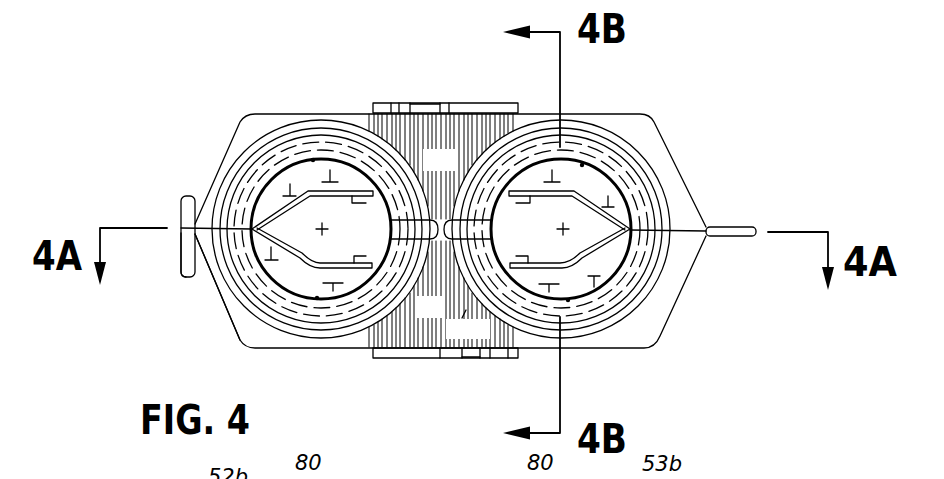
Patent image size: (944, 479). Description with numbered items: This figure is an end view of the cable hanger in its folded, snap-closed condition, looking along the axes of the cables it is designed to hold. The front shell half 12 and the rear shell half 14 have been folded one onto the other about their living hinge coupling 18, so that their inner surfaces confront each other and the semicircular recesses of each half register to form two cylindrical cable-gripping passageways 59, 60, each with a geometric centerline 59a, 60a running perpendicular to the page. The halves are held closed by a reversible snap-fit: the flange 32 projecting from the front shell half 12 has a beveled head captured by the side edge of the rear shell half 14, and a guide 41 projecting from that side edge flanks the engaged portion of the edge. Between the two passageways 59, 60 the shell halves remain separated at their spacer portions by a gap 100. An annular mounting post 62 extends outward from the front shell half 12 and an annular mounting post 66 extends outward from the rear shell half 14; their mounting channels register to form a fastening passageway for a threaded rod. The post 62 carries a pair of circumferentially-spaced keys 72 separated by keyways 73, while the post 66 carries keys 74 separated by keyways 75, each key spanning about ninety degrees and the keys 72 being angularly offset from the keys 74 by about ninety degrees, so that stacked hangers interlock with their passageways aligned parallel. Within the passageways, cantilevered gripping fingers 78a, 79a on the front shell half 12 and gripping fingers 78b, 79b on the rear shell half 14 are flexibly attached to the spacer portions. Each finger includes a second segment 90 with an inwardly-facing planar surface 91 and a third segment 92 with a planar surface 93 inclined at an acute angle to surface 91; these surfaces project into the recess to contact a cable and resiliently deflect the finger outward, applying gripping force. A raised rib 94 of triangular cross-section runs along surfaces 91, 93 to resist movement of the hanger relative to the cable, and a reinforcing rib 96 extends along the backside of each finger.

The front shell half 12 is at (670, 143).
The rear shell half 14 is at (216, 310).
The living hinge coupling 18 is at (740, 227).
The flange 32 is at (185, 273).
The guide 41 is at (186, 198).
The cable-gripping passageway 59 is at (307, 190).
The geometric centerline 59a is at (333, 286).
The cable-gripping passageway 60 is at (468, 258).
The geometric centerline 60a is at (468, 326).
The annular mounting post 62 is at (373, 107).
The annular mounting post 66 is at (372, 354).
The key 72 is at (390, 102).
The keyway 73 is at (440, 102).
The key 74 is at (423, 360).
The keyway 75 is at (456, 360).
The gripping finger 78a is at (317, 298).
The gripping finger 78b is at (313, 160).
The gripping finger 79a is at (568, 300).
The gripping finger 79b is at (582, 165).
The second segment 90 is at (312, 150).
The planar surface 91 is at (330, 170).
The third segment 92 is at (286, 190).
The planar surface 93 is at (592, 250).
The raised rib 94 is at (352, 204).
The reinforcing rib 96 is at (283, 150).
The gap 100 is at (442, 185).